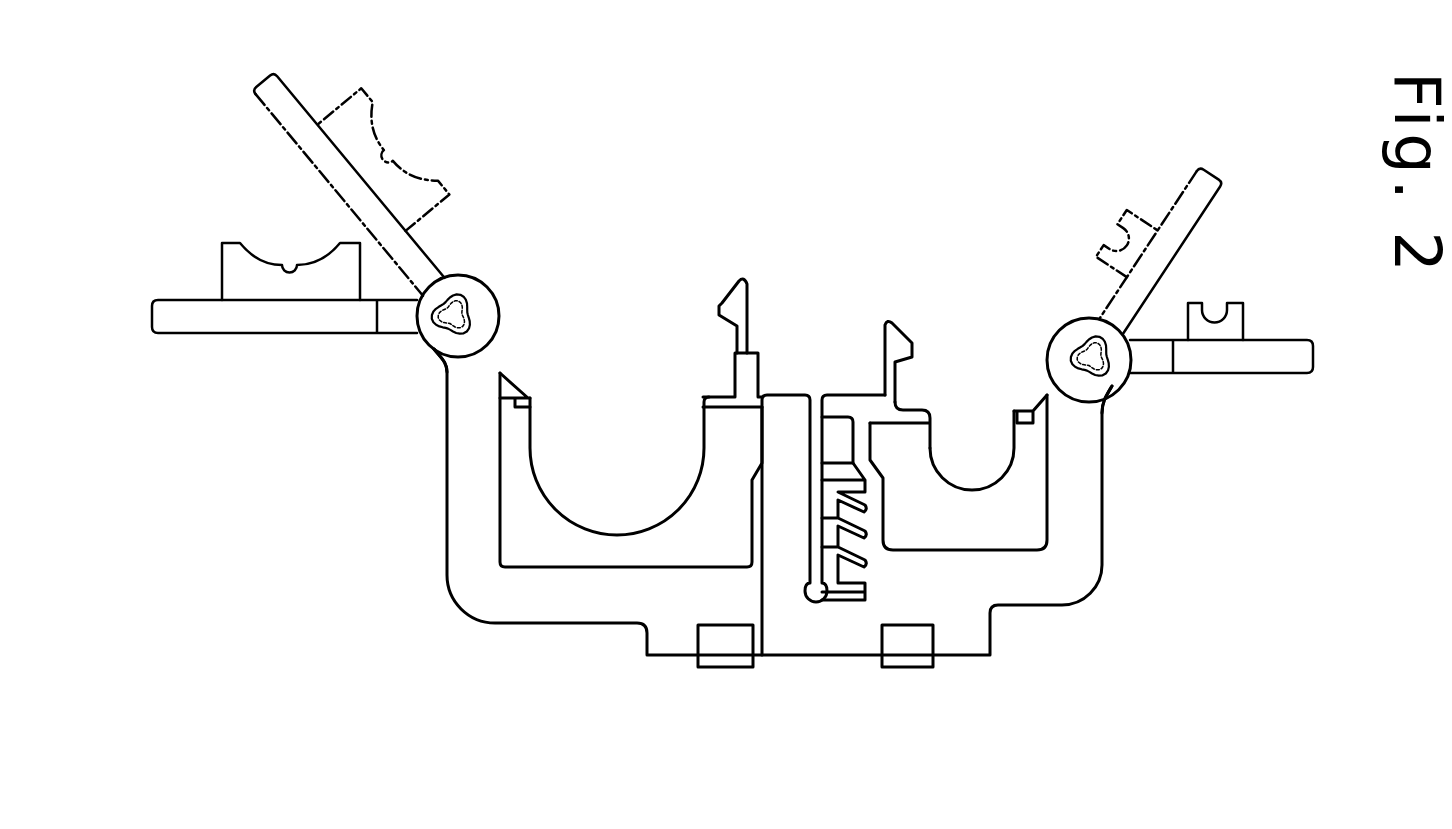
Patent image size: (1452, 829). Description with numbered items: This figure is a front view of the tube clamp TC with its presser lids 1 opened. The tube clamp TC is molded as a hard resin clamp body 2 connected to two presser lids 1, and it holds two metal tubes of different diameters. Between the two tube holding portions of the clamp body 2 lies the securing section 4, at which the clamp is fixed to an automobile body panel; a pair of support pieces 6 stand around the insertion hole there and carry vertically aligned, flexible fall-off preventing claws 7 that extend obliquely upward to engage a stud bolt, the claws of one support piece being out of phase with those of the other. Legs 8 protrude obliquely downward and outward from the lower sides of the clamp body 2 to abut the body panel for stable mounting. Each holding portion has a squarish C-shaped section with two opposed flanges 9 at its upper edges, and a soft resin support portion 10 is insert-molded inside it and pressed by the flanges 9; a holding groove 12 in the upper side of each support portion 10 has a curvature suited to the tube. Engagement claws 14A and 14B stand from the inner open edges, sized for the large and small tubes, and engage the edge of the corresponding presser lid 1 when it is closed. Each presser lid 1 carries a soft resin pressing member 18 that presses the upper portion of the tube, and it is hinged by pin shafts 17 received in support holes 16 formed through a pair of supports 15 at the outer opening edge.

The presser lid 1 is at (270, 113).
The clamp body 2 is at (526, 613).
The securing section 4 is at (790, 637).
The support pieces 6 is at (789, 420).
The fall-off preventing claws 7 is at (840, 570).
The legs 8 is at (734, 647).
The flanges 9 is at (530, 398).
The support portion 10 is at (530, 500).
The holding groove 12 is at (588, 527).
The engagement claw 14A is at (742, 280).
The engagement claw 14B is at (891, 323).
The supports 15 is at (433, 342).
The support holes 16 is at (452, 300).
The pin shafts 17 is at (470, 307).
The pressing members 18 is at (235, 270).
The tube clamp TC is at (826, 278).